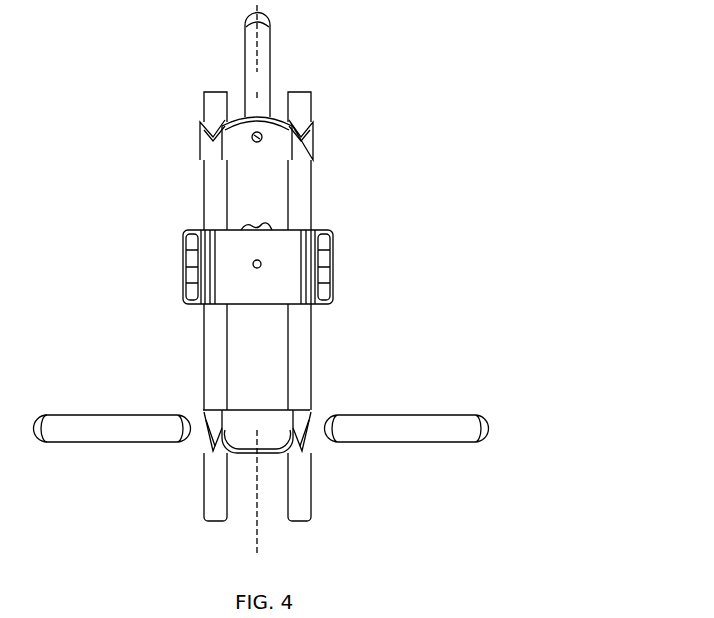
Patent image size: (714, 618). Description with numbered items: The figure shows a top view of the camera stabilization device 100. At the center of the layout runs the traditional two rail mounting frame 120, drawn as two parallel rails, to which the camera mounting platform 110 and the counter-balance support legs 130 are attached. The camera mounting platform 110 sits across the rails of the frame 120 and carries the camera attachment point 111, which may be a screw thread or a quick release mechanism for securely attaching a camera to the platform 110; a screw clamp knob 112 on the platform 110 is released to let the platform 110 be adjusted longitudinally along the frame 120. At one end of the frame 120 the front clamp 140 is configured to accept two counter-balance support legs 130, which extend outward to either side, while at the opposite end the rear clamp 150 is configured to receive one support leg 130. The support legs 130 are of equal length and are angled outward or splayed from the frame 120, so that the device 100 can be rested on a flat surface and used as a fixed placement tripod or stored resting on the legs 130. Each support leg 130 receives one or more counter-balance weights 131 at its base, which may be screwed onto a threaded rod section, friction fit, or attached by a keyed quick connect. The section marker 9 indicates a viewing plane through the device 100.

The central tube / section line 9 is at (262, 47).
The camera stabilization device 100 is at (165, 208).
The camera mounting platform 110 is at (336, 253).
The camera attachment point 111 is at (247, 263).
The screw clamp knob 112 is at (280, 221).
The two rail mounting frame 120 is at (313, 338).
The counter-balance support legs 130 is at (418, 412).
The counter-balance weights 131 is at (490, 417).
The front clamp 140 is at (316, 410).
The rear clamp 150 is at (317, 138).